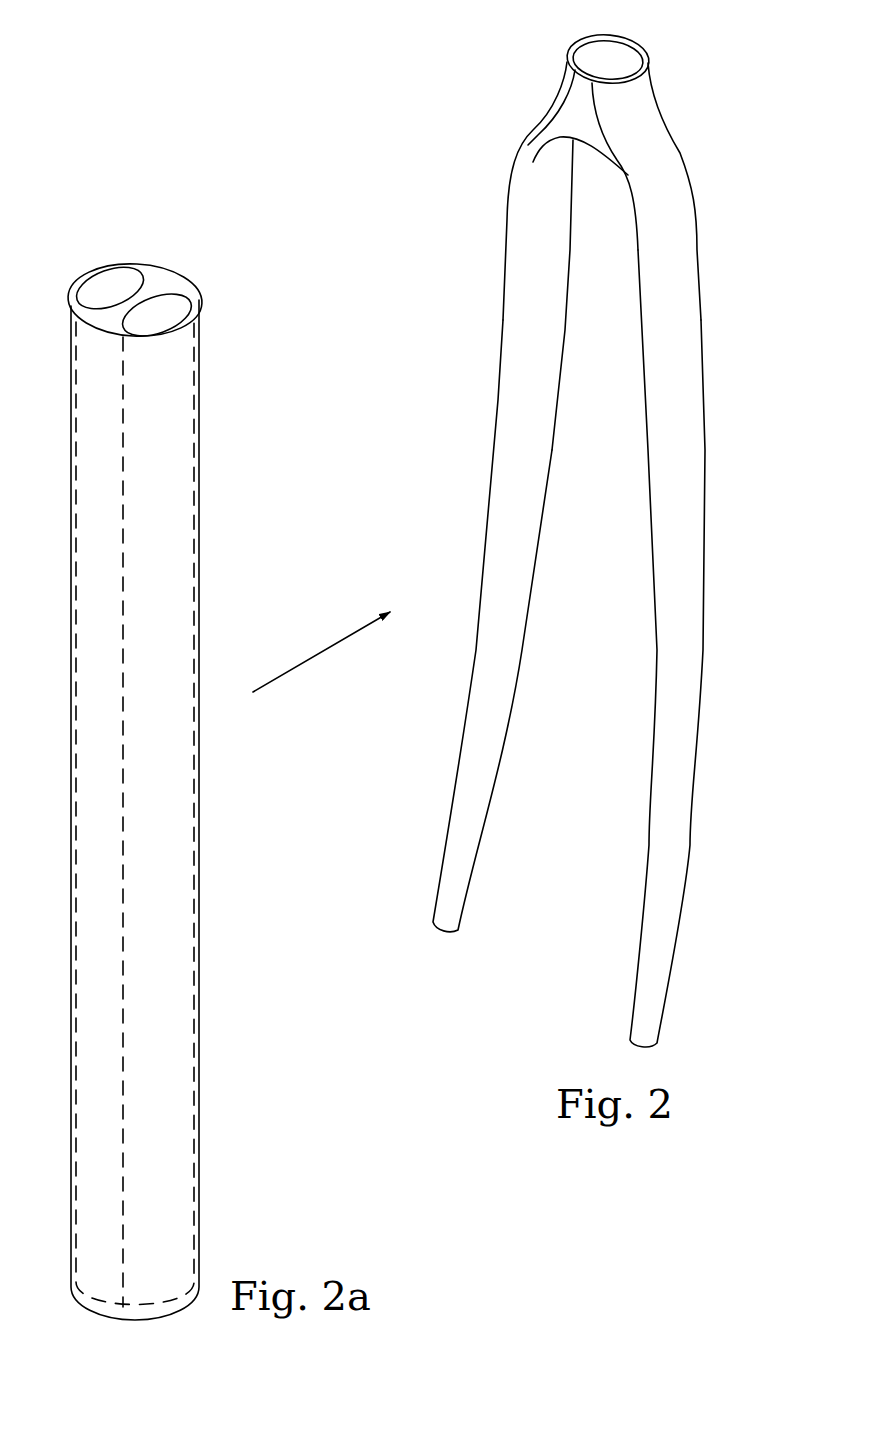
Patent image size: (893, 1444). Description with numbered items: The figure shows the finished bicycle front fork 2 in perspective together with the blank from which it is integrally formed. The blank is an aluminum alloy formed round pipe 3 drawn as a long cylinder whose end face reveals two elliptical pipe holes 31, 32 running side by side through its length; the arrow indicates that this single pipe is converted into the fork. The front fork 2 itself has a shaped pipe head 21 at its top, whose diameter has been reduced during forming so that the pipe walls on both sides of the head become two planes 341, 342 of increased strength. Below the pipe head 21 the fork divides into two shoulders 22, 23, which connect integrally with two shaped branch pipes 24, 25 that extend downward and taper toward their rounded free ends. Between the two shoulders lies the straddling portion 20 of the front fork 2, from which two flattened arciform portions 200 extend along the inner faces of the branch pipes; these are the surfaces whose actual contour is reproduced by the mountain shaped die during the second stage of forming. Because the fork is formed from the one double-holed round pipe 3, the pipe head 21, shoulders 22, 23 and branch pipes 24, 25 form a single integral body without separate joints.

In FIG. 2, the front fork 2 is at (570, 524).
In FIG. 2, the straddling portion 20 is at (588, 147).
In FIG. 2, the shaped pipe head 21 is at (573, 45).
In FIG. 2, the shoulder 22 is at (530, 128).
In FIG. 2, the shoulder 23 is at (653, 152).
In FIG. 2, the shaped branch pipe 24 is at (487, 523).
In FIG. 2, the shaped branch pipe 25 is at (682, 560).
In FIG. 2, the flattened arciform portion 200 is at (557, 288).
In FIG. 2, the plane 341 is at (573, 98).
In FIG. 2, the plane 342 is at (635, 43).
In FIG. 2A, the formed round pipe 3 is at (140, 761).
In FIG. 2A, the elliptical pipe hole 31 is at (120, 280).
In FIG. 2A, the elliptical pipe hole 32 is at (170, 307).